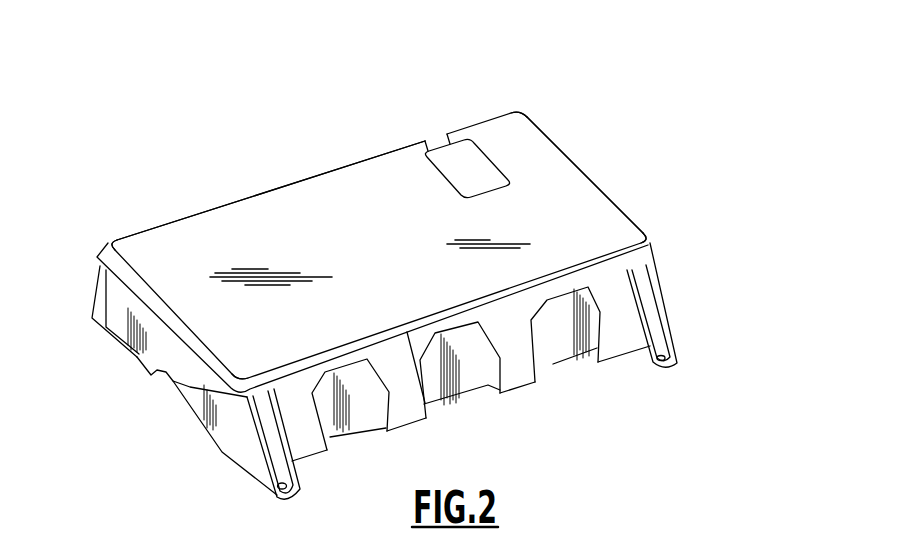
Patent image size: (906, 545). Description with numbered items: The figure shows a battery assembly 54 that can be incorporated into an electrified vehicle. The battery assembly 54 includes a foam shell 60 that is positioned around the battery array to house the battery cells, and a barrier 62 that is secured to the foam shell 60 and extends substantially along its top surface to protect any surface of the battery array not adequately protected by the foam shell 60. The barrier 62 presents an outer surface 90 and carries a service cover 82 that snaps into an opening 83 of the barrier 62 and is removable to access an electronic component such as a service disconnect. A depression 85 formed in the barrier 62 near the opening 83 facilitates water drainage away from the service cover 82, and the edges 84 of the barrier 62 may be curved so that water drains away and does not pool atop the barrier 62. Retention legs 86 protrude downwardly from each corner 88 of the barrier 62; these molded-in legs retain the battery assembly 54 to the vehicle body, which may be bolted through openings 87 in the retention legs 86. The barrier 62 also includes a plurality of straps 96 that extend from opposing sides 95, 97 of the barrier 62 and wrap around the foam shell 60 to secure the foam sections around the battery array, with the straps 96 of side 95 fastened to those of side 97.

The battery assembly 54 is at (576, 82).
The foam shell 60 is at (186, 413).
The barrier 62 is at (566, 198).
The service cover 82 is at (455, 172).
The opening 83 is at (492, 170).
The edges 84 is at (345, 165).
The depression 85 is at (432, 140).
The retention legs 86 is at (668, 310).
The openings 87 is at (672, 370).
The corner 88 is at (520, 106).
The outer surface 90 is at (353, 256).
The side 95 is at (283, 165).
The straps 96 is at (306, 388).
The side 97 is at (463, 340).